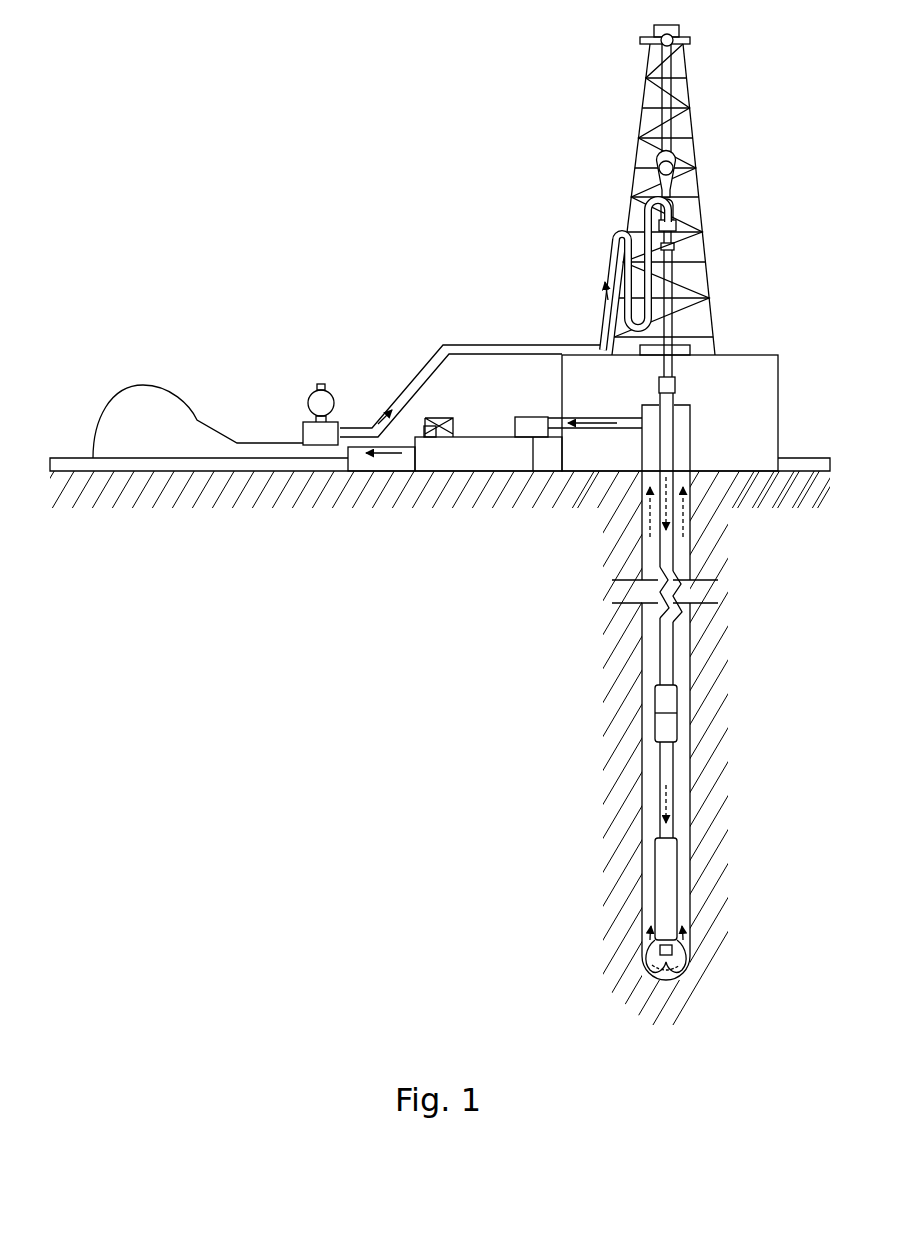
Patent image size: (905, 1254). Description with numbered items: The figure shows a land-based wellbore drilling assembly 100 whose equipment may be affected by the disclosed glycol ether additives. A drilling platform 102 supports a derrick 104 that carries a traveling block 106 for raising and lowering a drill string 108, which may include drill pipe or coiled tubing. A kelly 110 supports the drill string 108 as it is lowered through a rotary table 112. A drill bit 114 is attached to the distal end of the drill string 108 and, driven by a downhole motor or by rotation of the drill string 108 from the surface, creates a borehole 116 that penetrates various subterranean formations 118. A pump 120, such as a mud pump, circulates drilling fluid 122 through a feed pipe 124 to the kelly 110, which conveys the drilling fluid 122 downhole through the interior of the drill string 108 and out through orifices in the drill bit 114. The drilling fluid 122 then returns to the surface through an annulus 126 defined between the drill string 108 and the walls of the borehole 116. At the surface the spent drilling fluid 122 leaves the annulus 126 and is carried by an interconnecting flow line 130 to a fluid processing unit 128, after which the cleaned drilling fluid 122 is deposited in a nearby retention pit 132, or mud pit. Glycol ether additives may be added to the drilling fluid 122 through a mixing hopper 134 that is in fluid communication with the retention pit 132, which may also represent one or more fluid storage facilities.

The wellbore drilling assembly 100 is at (410, 100).
The drilling platform 102 is at (780, 358).
The derrick 104 is at (682, 95).
The traveling block 106 is at (675, 160).
The drill string 108 is at (673, 563).
The kelly 110 is at (672, 272).
The rotary table 112 is at (690, 350).
The drill bit 114 is at (690, 965).
The borehole 116 is at (690, 653).
The subterranean formations 118 is at (526, 686).
The pump 120 is at (164, 436).
The drilling fluid 122 is at (360, 430).
The feed pipe 124 is at (487, 343).
The annulus 126 is at (683, 797).
The fluid processing unit 128 is at (538, 417).
The flow line 130 is at (630, 430).
The retention pit 132 is at (510, 455).
The mixing hopper 134 is at (436, 432).